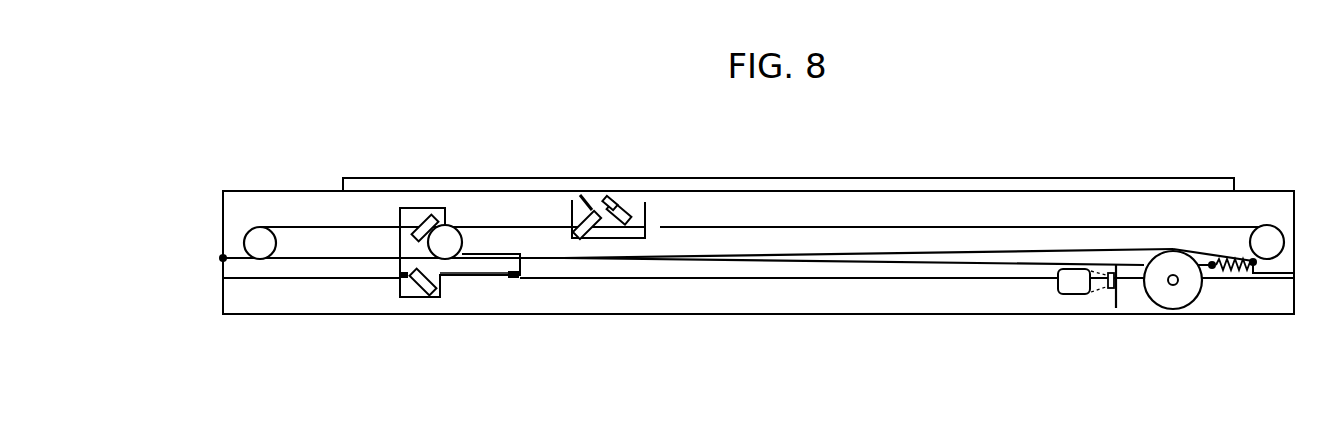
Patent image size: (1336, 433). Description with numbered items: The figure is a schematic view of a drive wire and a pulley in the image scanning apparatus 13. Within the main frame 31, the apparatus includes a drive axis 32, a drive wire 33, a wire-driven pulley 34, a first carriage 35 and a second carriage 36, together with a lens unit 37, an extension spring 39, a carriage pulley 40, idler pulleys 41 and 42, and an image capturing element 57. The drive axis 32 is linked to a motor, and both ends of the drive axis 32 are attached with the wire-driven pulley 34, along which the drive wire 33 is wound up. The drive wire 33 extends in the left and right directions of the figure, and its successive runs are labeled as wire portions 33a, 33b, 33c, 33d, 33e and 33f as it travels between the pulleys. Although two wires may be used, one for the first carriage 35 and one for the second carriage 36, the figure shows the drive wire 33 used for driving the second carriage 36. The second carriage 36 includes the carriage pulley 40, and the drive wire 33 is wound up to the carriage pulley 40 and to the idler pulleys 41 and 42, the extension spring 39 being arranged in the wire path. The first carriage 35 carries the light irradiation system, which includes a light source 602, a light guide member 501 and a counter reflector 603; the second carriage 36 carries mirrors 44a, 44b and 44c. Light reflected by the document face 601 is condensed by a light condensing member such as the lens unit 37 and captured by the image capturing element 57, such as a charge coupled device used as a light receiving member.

The image scanning apparatus 13 is at (966, 165).
The main frame 31 is at (244, 191).
The drive axis 32 is at (1172, 286).
The drive wire 33 is at (749, 249).
The drive wire portion 33a is at (843, 255).
The drive wire portion 33b is at (297, 227).
The drive wire portion 33c is at (292, 258).
The drive wire portion 33d is at (1227, 255).
The drive wire portion 33e is at (793, 227).
The drive wire portion 33f is at (717, 262).
The wire-driven pulley 34 is at (1198, 299).
The first carriage 35 is at (626, 220).
The second carriage 36 is at (437, 249).
The lens unit 37 is at (1058, 286).
The extension spring 39 is at (1237, 270).
The carriage pulley 40 is at (461, 243).
The idler pulley 41 is at (279, 243).
The idler pulley 42 is at (1286, 243).
The mirror 44a is at (597, 237).
The mirror 44b is at (424, 219).
The mirror 44c is at (424, 291).
The image capturing element 57 is at (1112, 292).
The light guide member 501 is at (612, 199).
The document face 601 is at (853, 178).
The light source 602 is at (623, 207).
The counter reflector 603 is at (588, 198).